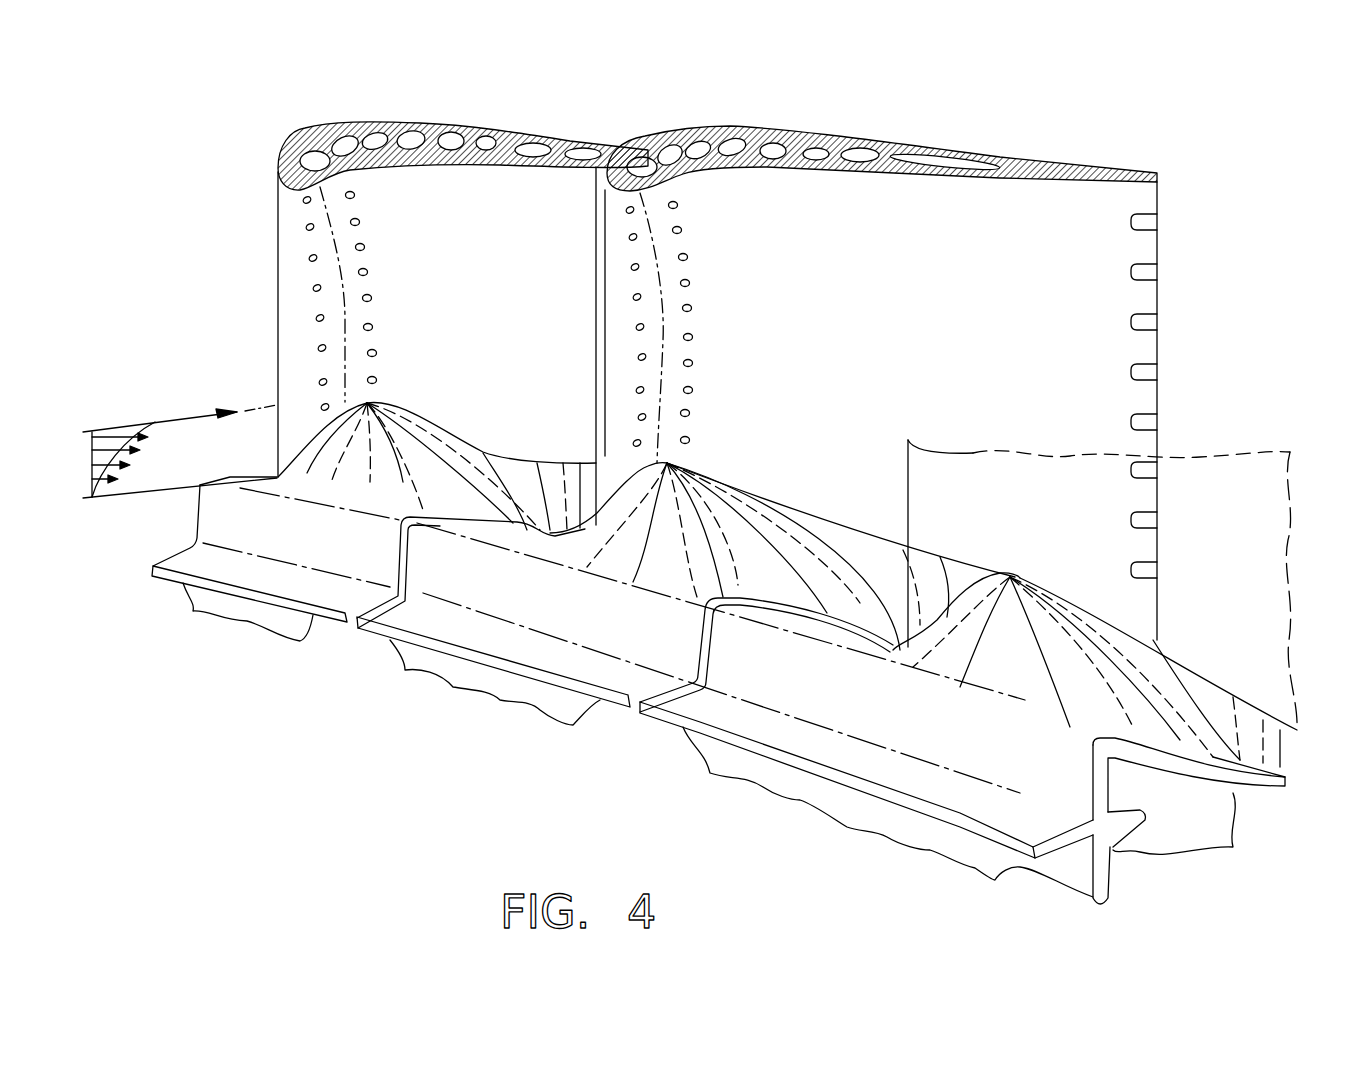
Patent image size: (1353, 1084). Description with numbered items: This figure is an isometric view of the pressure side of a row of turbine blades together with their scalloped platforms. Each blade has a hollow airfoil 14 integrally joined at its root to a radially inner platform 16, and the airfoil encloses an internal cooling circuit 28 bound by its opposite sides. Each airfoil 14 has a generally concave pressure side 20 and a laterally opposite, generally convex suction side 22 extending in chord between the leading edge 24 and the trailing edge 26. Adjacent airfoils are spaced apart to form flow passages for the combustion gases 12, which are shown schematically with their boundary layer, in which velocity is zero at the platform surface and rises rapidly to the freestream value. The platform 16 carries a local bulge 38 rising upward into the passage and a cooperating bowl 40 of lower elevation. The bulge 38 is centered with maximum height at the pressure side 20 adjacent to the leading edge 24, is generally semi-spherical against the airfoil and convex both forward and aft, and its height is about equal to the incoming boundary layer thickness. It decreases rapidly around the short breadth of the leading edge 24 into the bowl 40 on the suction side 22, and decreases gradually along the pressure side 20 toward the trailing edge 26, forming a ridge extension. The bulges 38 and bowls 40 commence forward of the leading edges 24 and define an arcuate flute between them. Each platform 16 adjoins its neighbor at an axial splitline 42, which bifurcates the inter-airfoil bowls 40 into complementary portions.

The combustion gases 12 is at (180, 416).
The airfoil 14 is at (1200, 450).
The platform 16 is at (657, 713).
The pressure side 20 is at (921, 369).
The suction side 22 is at (840, 134).
The leading edge 24 is at (328, 240).
The trailing edge 26 is at (1160, 247).
The internal cooling circuit 28 is at (733, 150).
The bulge 38 is at (368, 405).
The bowl 40 is at (565, 536).
The axial splitline 42 is at (400, 552).